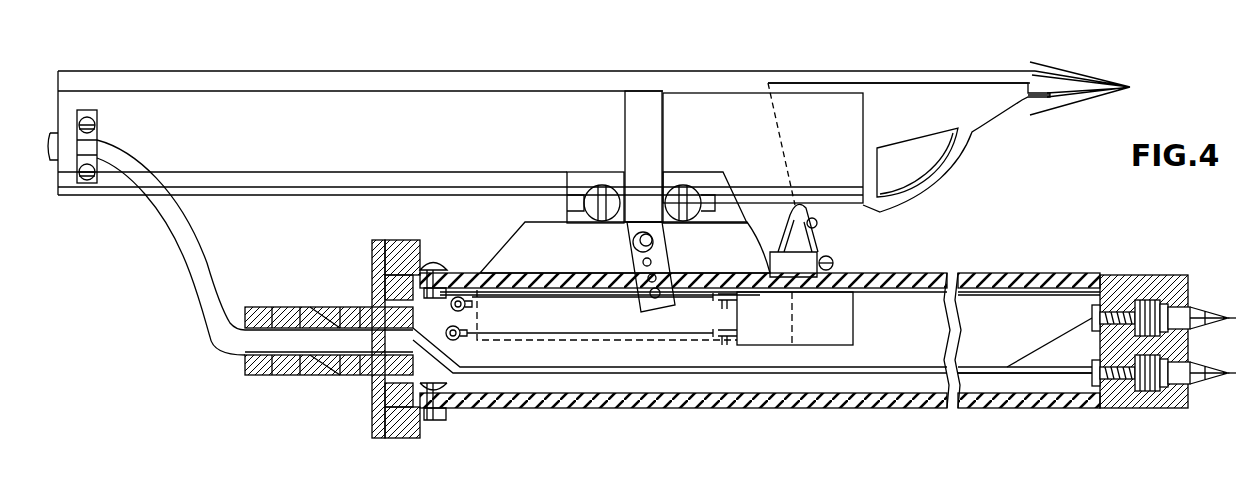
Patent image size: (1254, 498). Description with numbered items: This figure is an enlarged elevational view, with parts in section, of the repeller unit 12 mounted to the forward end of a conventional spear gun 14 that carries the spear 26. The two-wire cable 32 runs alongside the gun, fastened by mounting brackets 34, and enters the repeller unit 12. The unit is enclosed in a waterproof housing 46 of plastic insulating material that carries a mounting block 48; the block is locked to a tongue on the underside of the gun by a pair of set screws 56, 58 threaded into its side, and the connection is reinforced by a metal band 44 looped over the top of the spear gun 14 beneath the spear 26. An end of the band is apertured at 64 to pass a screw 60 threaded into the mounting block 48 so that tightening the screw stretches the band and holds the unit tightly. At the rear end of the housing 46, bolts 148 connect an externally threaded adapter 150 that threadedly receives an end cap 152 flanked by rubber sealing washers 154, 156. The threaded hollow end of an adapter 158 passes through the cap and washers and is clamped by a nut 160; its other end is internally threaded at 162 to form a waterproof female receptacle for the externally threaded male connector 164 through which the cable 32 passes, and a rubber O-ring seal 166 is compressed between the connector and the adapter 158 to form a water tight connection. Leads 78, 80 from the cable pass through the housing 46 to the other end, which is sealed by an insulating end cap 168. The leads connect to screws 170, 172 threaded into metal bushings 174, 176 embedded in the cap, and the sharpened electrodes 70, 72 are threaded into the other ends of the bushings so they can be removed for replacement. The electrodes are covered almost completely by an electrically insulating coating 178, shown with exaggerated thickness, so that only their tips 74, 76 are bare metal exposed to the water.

The repeller unit 12 is at (1044, 262).
The spear gun 14 is at (726, 105).
The spear 26 is at (938, 72).
The two-wire cable 32 is at (170, 219).
The mounting brackets 34 is at (97, 110).
The metal band 44 is at (657, 100).
The waterproof housing 46 is at (1008, 278).
The mounting block 48 is at (516, 236).
The set screw 56 is at (690, 190).
The set screw 58 is at (596, 190).
The screw 60 is at (655, 245).
The aperture 64 is at (660, 278).
The electrode 70 is at (1210, 310).
The electrode 72 is at (1204, 386).
The tip 74 is at (1236, 318).
The tip 76 is at (1236, 373).
The lead 78 is at (1046, 340).
The lead 80 is at (1033, 380).
The bolts 148 is at (433, 258).
The externally threaded adapter 150 is at (398, 256).
The end cap 152 is at (374, 262).
The rubber sealing washer 154 is at (372, 390).
The rubber sealing washer 156 is at (404, 310).
The adapter 158 is at (336, 307).
The nut 160 is at (445, 340).
The internal threads 162 is at (295, 307).
The male connector 164 is at (266, 307).
The sealing ring 166 is at (325, 376).
The insulating end cap 168 is at (1125, 400).
The screw 170 is at (1118, 300).
The screw 172 is at (1105, 390).
The metal bushing 174 is at (1145, 300).
The metal bushing 176 is at (1150, 392).
The insulating coating 178 is at (1190, 302).